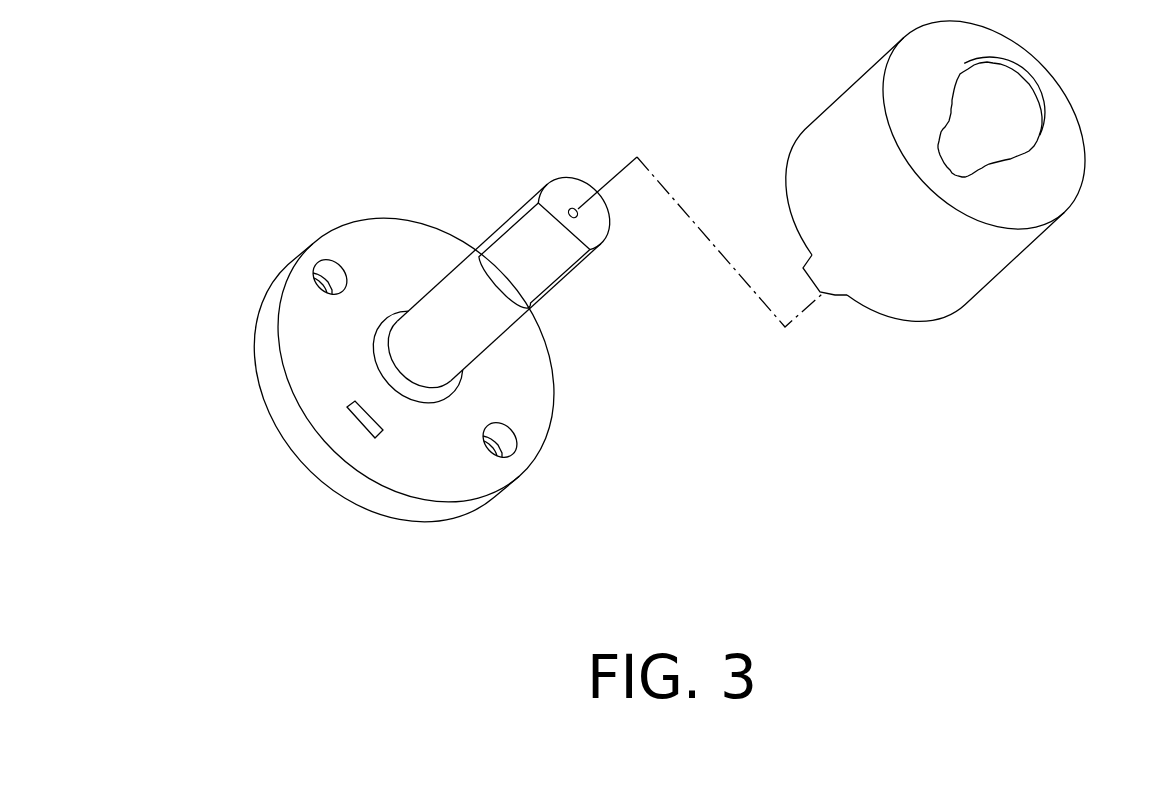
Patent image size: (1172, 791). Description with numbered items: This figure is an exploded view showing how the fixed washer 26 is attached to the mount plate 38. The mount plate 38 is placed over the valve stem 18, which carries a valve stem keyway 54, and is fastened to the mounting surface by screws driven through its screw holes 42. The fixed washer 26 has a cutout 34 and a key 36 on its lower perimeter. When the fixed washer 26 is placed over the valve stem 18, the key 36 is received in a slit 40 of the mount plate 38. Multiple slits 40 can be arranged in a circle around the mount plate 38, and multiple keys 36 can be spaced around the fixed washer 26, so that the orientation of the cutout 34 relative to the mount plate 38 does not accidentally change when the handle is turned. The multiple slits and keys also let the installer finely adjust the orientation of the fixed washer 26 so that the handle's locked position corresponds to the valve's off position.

The valve stem 18 is at (497, 222).
The fixed washer 26 is at (958, 270).
The cutout 34 is at (995, 122).
The key 36 is at (837, 296).
The mount plate 38 is at (454, 515).
The slit 40 is at (357, 431).
The screw holes 42 is at (336, 258).
The valve stem keyway 54 is at (538, 262).